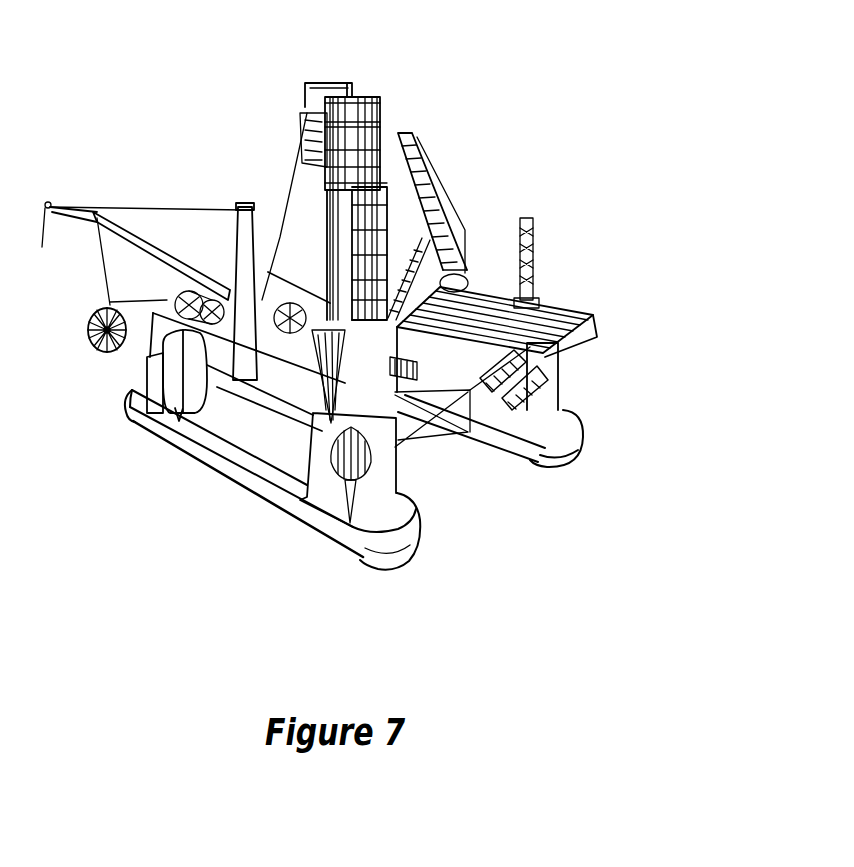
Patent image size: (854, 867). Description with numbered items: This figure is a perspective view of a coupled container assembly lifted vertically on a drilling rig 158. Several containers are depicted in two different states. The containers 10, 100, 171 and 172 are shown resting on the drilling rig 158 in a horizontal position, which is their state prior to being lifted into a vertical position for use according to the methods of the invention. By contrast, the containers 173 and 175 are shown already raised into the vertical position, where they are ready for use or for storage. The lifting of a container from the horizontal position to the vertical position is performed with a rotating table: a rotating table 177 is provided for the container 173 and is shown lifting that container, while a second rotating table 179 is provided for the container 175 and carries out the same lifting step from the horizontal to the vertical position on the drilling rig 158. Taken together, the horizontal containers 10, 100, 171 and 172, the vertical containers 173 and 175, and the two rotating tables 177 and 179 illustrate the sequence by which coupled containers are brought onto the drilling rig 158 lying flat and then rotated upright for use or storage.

The container 10 is at (485, 300).
The container 100 is at (527, 347).
The drilling rig 158 is at (257, 507).
The container 171 is at (479, 357).
The container 172 is at (527, 355).
The container 173 is at (347, 220).
The container 175 is at (410, 215).
The rotating table 177 is at (347, 287).
The rotating table 179 is at (443, 205).